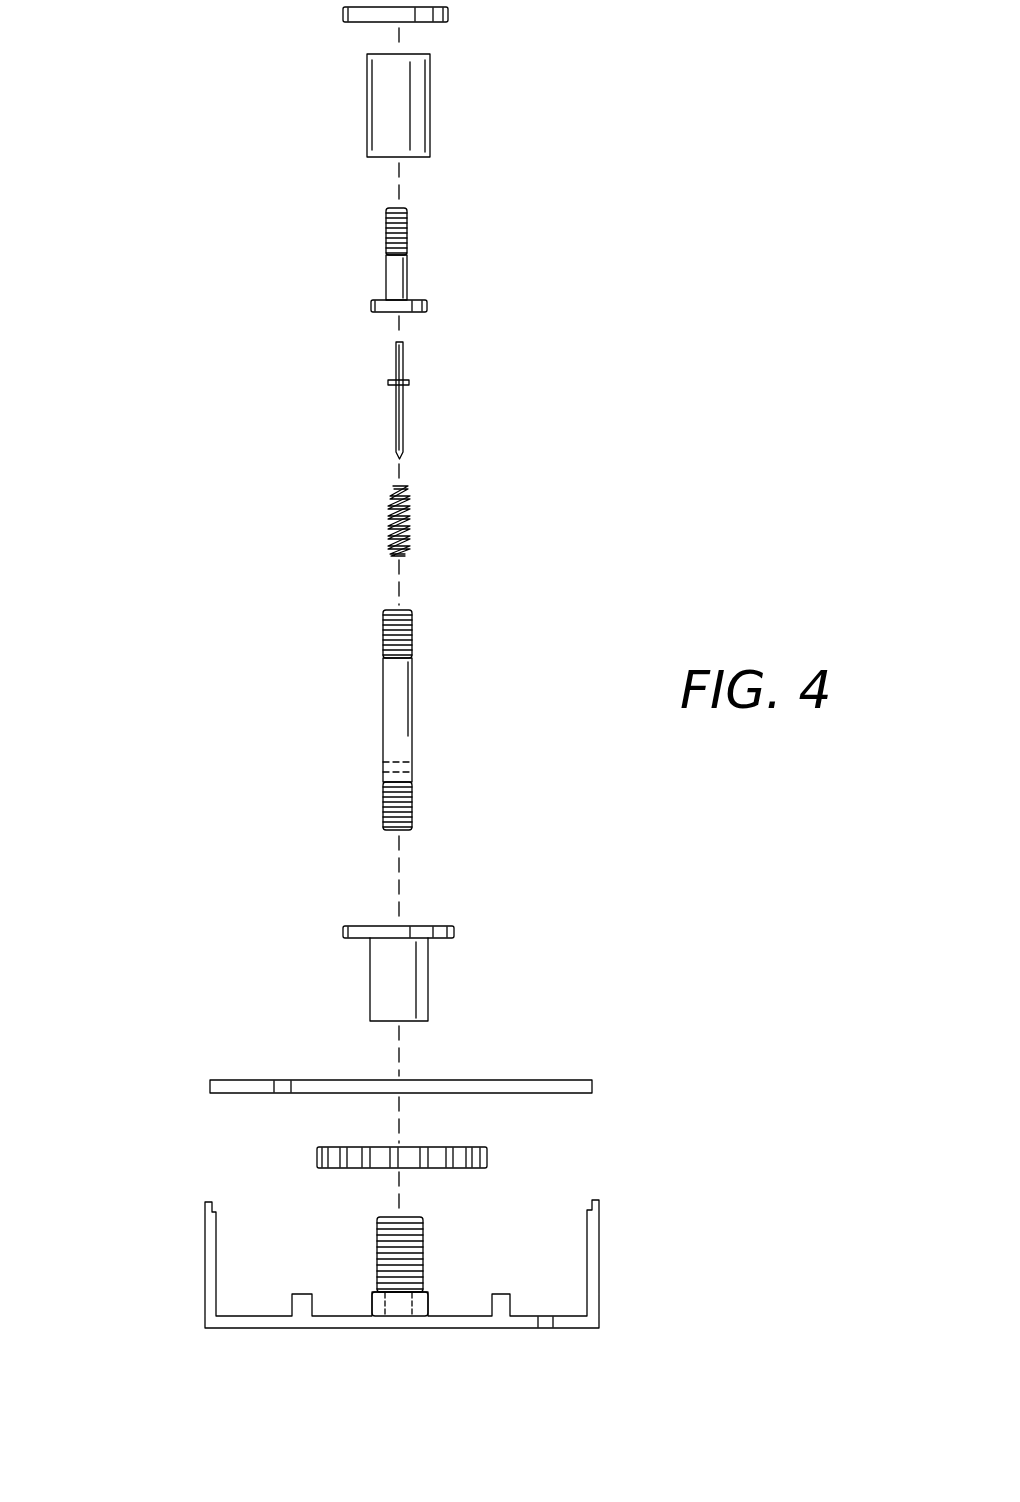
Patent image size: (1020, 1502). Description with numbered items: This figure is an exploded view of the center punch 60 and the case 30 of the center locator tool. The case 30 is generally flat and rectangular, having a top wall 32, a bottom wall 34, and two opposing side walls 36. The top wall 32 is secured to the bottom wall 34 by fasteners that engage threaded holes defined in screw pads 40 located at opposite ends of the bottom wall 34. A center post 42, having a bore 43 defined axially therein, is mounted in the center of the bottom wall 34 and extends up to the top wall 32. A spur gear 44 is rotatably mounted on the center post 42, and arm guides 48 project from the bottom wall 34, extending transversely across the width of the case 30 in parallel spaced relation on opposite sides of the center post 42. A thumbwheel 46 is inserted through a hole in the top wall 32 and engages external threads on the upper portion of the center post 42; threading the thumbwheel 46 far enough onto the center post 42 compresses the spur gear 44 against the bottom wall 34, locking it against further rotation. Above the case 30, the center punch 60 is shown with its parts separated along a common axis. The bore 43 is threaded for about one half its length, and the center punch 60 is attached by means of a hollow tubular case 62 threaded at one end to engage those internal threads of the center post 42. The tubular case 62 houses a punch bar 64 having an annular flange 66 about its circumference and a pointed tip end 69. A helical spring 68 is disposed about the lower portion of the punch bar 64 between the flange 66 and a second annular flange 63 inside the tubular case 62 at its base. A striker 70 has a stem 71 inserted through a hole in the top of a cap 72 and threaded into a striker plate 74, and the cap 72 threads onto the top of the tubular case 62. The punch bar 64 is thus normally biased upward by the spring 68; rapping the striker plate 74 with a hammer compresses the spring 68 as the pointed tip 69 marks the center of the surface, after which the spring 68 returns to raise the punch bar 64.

The case 30 is at (598, 1146).
The top wall 32 is at (510, 1080).
The bottom wall 34 is at (255, 1329).
The side walls 36 is at (600, 1268).
The screw pads 40 is at (372, 1304).
The center post 42 is at (423, 1259).
The bore 43 is at (385, 1208).
The spur gear 44 is at (317, 1157).
The thumbwheel 46 is at (352, 925).
The arm guides 48 is at (500, 1293).
The center punch 60 is at (442, 528).
The tubular case 62 is at (383, 665).
The second annular flange 63 is at (395, 753).
The punch bar 64 is at (403, 372).
The annular flange 66 is at (388, 384).
The helical spring 68 is at (387, 512).
The pointed tip end 69 is at (405, 458).
The striker 70 is at (370, 306).
The stem 71 is at (407, 262).
The cap 72 is at (366, 120).
The striker plate 74 is at (448, 14).